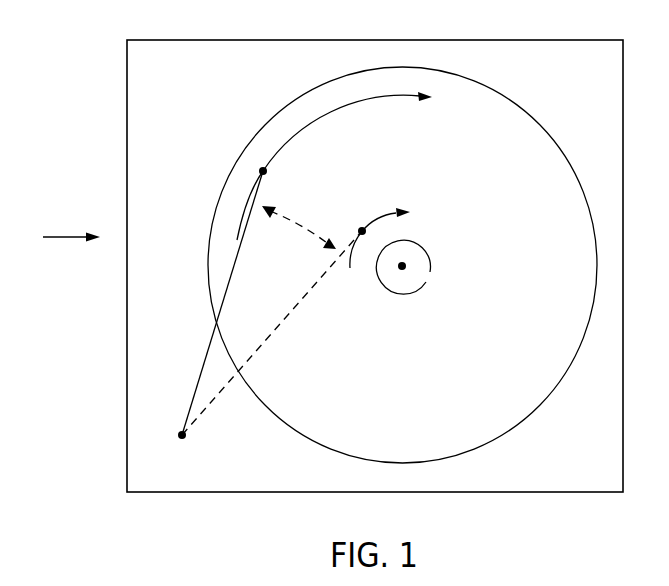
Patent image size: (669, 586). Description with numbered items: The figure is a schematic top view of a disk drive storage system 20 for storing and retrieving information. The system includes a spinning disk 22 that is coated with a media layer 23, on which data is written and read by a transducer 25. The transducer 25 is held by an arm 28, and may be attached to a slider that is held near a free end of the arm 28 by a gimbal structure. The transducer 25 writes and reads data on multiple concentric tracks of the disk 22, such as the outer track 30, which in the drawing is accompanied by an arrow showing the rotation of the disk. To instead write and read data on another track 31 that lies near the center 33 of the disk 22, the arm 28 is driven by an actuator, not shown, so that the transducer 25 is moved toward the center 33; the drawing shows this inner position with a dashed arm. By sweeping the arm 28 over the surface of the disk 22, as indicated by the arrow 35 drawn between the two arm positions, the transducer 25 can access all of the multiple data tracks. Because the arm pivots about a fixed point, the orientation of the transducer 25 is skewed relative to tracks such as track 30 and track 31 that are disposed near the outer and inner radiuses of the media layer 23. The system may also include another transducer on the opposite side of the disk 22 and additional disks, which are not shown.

The disk drive storage system 20 is at (61, 238).
The spinning disk 22 is at (555, 145).
The media layer 23 is at (517, 276).
The transducer 25 is at (263, 171).
The arm 28 is at (208, 356).
The track 30 is at (333, 112).
The track 31 is at (375, 216).
The center 33 is at (402, 267).
The arrow 35 is at (300, 226).